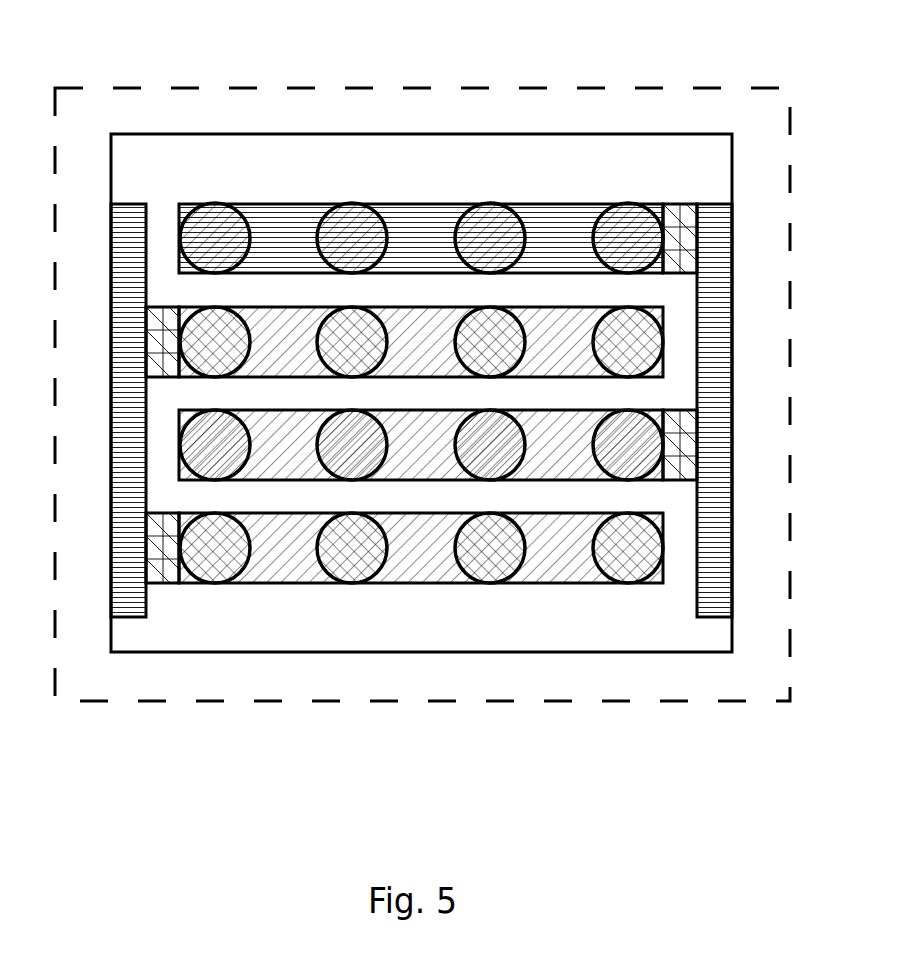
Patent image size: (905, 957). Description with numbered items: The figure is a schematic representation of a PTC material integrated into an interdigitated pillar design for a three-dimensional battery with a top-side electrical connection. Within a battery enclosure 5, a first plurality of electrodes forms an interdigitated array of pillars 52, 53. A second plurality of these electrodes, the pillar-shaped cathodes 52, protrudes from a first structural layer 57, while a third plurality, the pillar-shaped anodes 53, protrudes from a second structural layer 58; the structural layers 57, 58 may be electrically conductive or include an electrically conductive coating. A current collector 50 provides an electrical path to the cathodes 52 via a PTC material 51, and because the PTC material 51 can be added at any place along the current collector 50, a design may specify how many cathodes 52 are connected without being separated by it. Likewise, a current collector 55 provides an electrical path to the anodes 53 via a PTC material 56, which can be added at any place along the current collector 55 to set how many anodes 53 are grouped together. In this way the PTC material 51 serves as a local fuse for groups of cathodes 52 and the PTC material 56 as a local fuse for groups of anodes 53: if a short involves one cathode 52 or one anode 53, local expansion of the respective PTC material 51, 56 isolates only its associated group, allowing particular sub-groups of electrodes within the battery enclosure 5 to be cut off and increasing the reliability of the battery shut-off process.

The battery enclosure 5 is at (410, 705).
The current collector 50 is at (720, 593).
The PTC material 51 is at (682, 225).
The pillar-shaped cathodes 52 is at (223, 223).
The pillar-shaped anodes 53 is at (350, 555).
The current collector 55 is at (133, 220).
The PTC material 56 is at (168, 567).
The first structural layer 57 is at (560, 230).
The second structural layer 58 is at (563, 568).